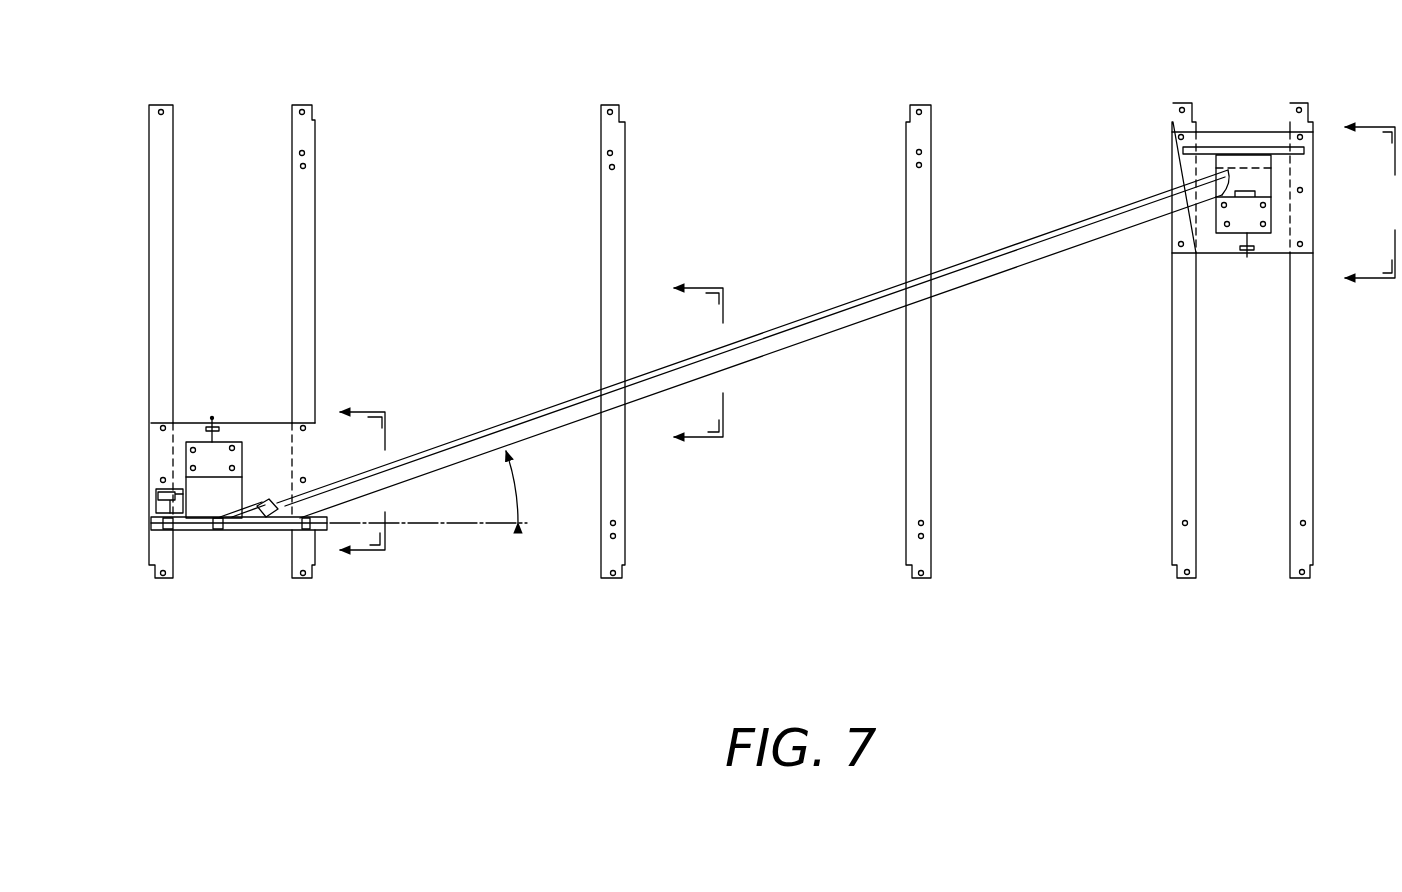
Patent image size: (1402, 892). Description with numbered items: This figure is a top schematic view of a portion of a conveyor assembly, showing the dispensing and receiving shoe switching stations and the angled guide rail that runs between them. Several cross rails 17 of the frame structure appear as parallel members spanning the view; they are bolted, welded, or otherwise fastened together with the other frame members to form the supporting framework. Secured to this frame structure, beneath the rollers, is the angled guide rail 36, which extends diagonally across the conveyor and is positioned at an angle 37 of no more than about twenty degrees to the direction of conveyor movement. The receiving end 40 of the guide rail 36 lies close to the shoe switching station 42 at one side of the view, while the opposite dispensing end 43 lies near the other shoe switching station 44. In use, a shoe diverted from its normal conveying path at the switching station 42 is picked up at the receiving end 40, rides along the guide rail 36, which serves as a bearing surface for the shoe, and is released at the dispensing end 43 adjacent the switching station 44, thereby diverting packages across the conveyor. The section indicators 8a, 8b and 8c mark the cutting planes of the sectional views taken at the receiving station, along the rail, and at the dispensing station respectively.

The cross rails 17 is at (173, 127).
The angled guide rail 36 is at (830, 308).
The angle 37 is at (515, 490).
The receiving end 40 is at (283, 500).
The shoe switching station 42 is at (140, 514).
The dispensing end 43 is at (1212, 170).
The shoe switching station 44 is at (1142, 152).
The section line 8a is at (362, 486).
The section line 8b is at (697, 366).
The section line 8c is at (1369, 206).